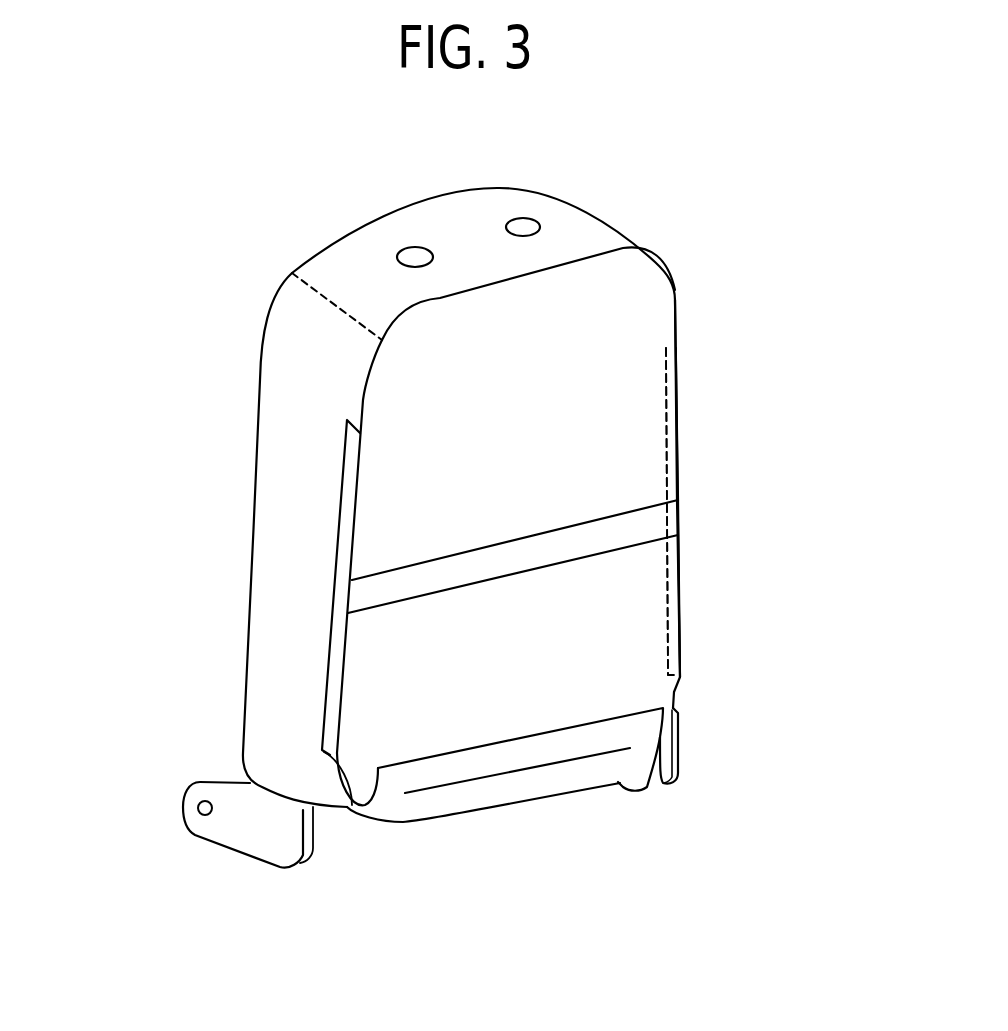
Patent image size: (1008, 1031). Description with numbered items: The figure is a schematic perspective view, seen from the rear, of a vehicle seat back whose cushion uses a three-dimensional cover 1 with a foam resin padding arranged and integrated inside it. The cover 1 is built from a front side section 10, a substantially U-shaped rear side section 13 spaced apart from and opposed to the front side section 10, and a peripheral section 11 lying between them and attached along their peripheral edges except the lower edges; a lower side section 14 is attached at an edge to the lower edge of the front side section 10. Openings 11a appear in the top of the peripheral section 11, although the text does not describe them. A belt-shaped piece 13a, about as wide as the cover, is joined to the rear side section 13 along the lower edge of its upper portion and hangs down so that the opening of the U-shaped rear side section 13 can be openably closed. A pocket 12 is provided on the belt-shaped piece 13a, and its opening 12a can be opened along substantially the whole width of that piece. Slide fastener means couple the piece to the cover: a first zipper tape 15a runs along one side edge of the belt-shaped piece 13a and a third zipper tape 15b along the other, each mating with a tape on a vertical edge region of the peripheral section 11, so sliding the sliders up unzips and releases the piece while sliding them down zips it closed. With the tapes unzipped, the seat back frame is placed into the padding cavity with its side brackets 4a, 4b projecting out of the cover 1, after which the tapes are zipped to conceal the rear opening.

The three-dimensional cover 1 is at (310, 232).
The front side section 10 is at (246, 627).
The peripheral section 11 is at (560, 238).
The headrest insertion holes 11a is at (412, 252).
The pocket 12 is at (615, 542).
The opening 12a is at (563, 527).
The rear side section 13 is at (678, 327).
The belt-shaped piece 13a is at (482, 670).
The lower side section 14 is at (560, 798).
The first zipper tape 15a is at (343, 458).
The third zipper tape 15b is at (678, 417).
The side bracket 4a is at (217, 830).
The side bracket 4b is at (680, 753).